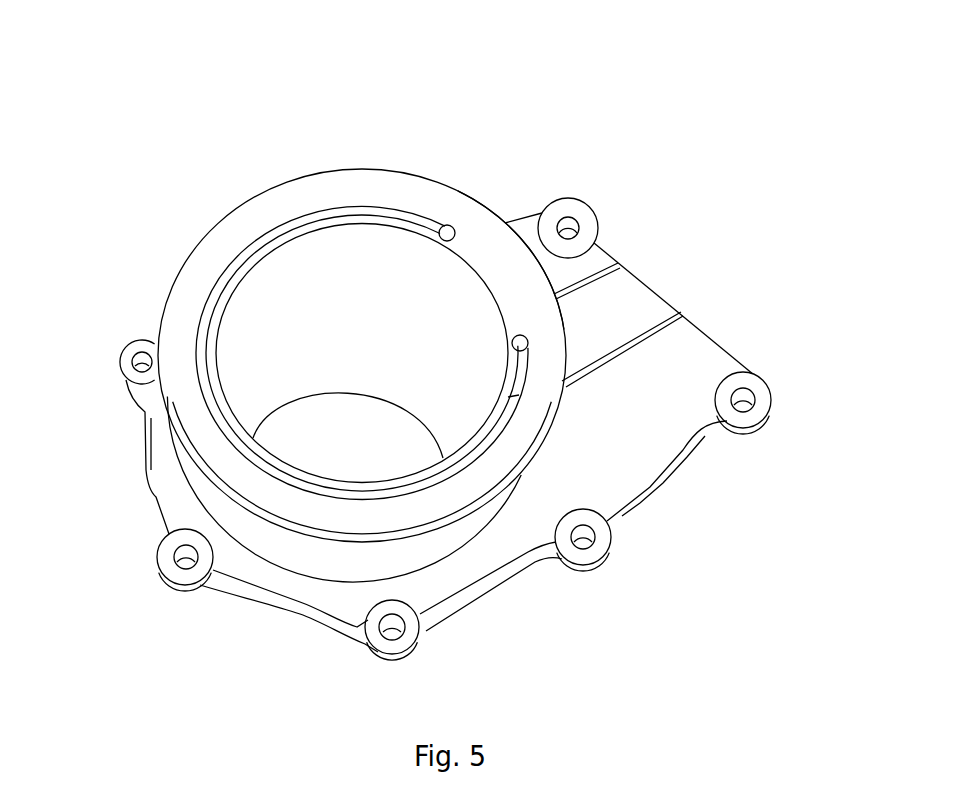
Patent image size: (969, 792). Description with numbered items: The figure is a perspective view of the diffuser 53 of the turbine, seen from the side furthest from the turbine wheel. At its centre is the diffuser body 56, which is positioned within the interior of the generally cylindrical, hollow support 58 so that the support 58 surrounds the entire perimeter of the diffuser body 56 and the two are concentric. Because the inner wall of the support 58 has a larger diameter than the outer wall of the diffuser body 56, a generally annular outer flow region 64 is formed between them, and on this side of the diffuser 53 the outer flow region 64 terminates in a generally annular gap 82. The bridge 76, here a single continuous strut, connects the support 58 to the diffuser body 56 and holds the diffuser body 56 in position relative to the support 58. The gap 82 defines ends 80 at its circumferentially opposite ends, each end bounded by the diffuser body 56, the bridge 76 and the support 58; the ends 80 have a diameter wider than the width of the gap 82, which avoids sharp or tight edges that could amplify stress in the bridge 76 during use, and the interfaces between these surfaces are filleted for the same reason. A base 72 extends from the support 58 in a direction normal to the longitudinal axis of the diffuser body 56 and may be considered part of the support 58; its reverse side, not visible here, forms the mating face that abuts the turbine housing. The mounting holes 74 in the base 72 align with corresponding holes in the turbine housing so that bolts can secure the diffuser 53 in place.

The diffuser 53 is at (309, 98).
The annular gap 82 is at (287, 182).
The outer flow region 64 is at (237, 252).
The ends 80 is at (447, 227).
The bridge 76 is at (484, 266).
The diffuser body 56 is at (222, 307).
The support 58 is at (212, 490).
The base 72 is at (693, 366).
The mounting holes 74 is at (568, 228).